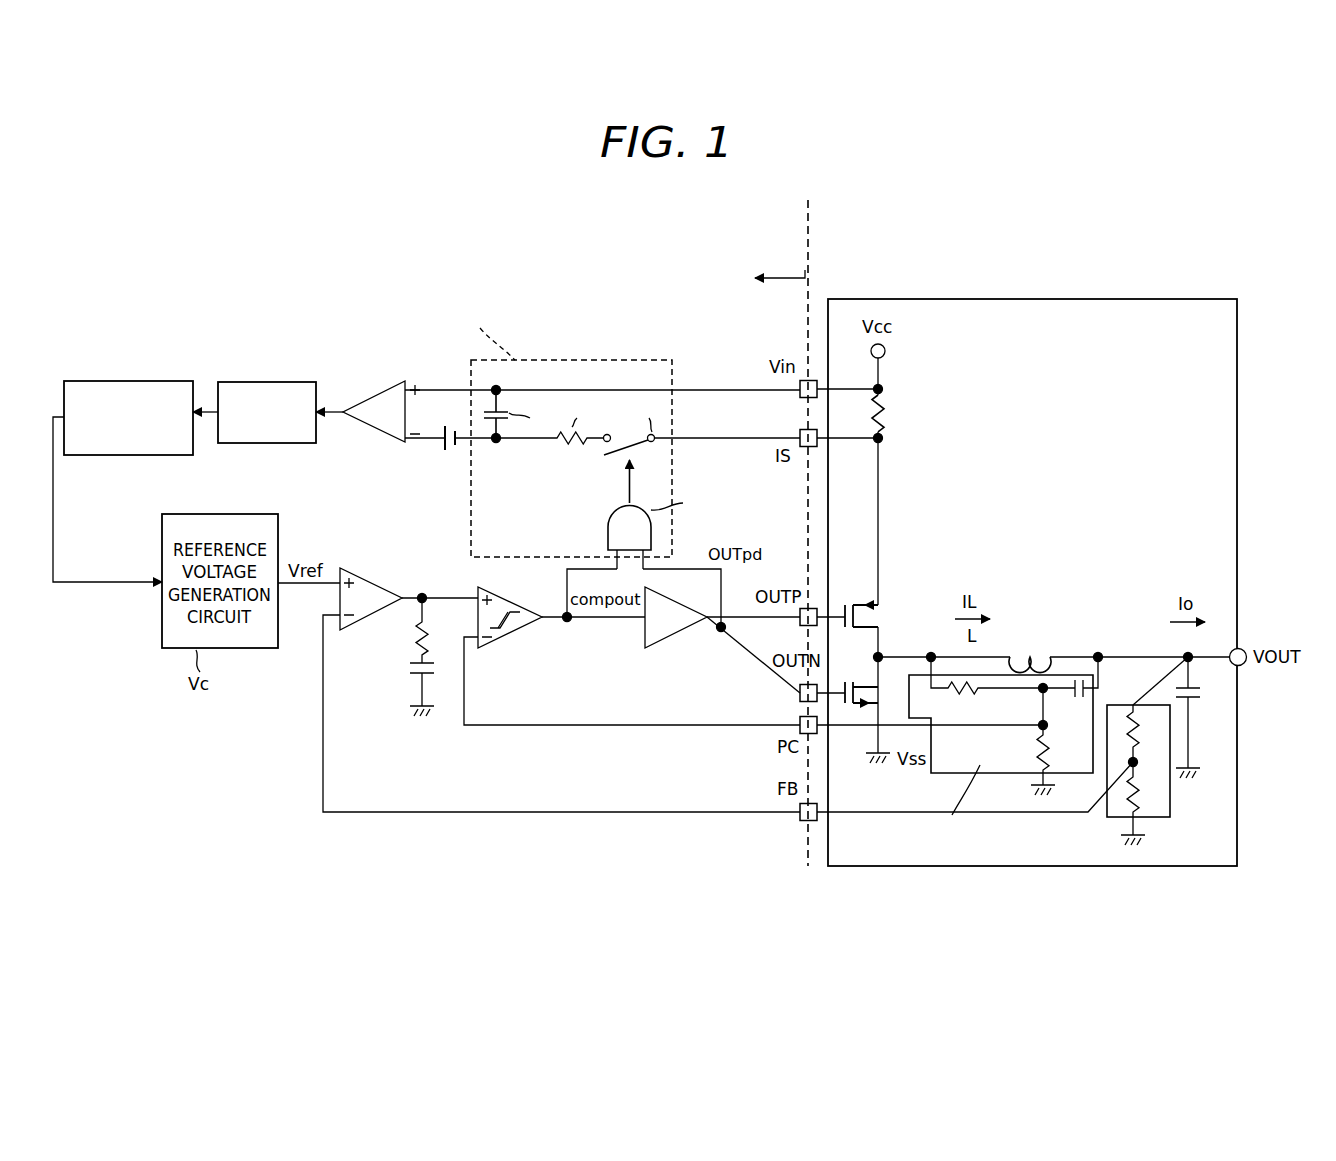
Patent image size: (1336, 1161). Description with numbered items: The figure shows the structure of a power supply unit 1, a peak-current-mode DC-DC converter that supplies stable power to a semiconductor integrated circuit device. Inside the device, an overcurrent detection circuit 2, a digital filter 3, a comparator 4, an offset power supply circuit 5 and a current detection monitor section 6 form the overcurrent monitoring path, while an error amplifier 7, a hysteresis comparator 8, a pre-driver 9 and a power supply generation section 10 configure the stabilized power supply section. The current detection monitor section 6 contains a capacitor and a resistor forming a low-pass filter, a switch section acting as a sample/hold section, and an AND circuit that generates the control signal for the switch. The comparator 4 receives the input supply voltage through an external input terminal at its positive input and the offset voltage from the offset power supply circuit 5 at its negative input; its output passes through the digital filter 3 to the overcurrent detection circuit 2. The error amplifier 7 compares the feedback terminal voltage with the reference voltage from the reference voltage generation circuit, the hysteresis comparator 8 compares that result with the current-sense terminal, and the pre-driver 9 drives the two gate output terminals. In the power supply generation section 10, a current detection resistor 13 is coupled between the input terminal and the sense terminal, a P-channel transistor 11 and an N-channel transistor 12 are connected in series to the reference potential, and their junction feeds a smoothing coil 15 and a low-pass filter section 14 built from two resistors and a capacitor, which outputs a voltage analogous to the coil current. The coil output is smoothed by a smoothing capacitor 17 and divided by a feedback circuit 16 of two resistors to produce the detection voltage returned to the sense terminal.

The power supply unit 1 is at (1140, 268).
The overcurrent detection circuit 2 is at (185, 381).
The digital filter 3 is at (301, 382).
The comparator 4 is at (363, 398).
The offset power supply circuit 5 is at (448, 452).
The current detection monitor section 6 is at (654, 360).
The error amplifier 7 is at (364, 576).
The hysteresis comparator 8 is at (505, 645).
The pre-driver 9 is at (676, 637).
The power supply generation section 10 is at (1218, 299).
The transistor 11 is at (858, 602).
The transistor 12 is at (847, 706).
The current detection resistor 13 is at (885, 413).
The low-pass filter section 14 is at (1098, 698).
The smoothing coil 15 is at (1024, 652).
The feedback circuit 16 is at (1107, 808).
The smoothing capacitor 17 is at (1198, 704).